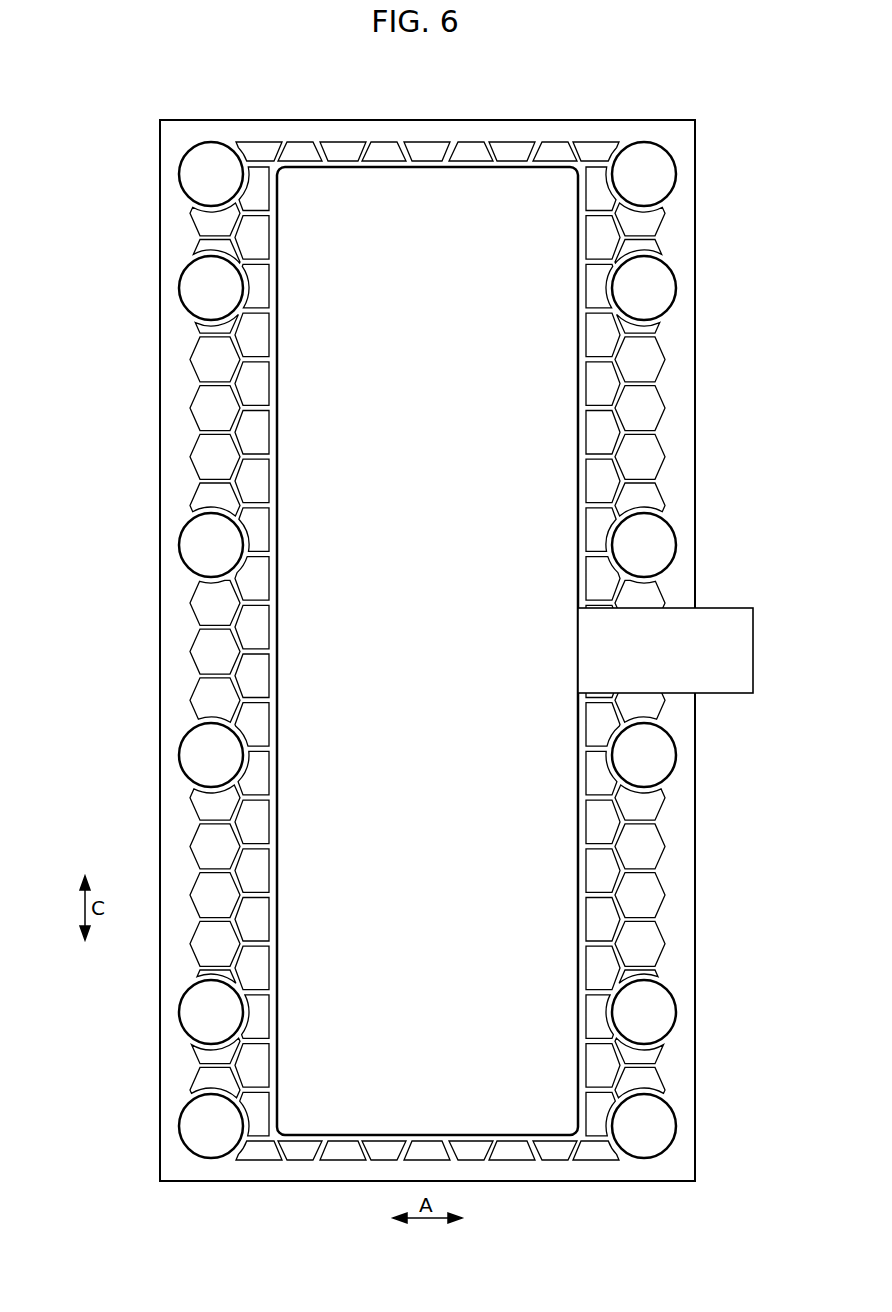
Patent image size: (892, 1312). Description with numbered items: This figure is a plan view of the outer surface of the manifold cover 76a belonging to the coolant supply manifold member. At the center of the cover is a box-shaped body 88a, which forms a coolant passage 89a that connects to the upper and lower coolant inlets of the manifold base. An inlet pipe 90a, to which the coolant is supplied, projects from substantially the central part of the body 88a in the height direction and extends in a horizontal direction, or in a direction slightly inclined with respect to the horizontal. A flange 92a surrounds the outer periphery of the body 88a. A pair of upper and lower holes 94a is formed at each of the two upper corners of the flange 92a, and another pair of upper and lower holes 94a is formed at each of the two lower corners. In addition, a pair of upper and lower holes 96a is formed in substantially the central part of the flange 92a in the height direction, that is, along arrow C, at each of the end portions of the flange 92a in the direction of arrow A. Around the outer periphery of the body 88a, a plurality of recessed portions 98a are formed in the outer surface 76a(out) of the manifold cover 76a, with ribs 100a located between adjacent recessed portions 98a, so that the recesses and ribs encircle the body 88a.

The manifold cover 76a is at (678, 73).
The box-shaped body 88a is at (312, 205).
The coolant passage 89a is at (345, 394).
The inlet pipe 90a is at (740, 658).
The flange 92a is at (554, 135).
The holes 94a is at (200, 174).
The holes 96a is at (200, 545).
The recessed portions 98a is at (428, 152).
The ribs 100a is at (452, 157).